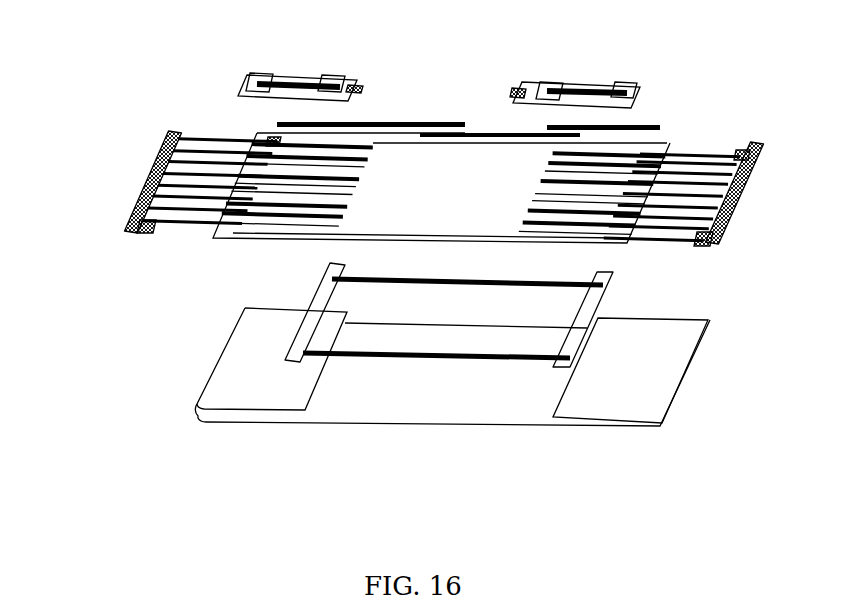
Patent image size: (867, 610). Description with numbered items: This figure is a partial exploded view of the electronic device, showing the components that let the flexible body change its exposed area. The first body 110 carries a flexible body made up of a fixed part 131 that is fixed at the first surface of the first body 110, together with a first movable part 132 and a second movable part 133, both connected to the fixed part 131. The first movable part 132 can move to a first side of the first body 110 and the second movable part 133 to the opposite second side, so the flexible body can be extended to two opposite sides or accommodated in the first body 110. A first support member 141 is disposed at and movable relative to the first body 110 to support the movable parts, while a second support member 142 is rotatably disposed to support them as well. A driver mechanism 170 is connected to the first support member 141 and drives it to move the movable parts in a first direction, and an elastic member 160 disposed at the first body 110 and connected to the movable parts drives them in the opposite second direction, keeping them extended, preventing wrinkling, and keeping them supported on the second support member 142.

The first body 110 is at (382, 217).
The fixed part 131 is at (363, 410).
The first movable part 132 is at (250, 400).
The second movable part 133 is at (595, 400).
The first support member 141 is at (167, 225).
The second support member 142 is at (128, 232).
The elastic member 160 is at (487, 288).
The driver mechanism 170 is at (353, 87).